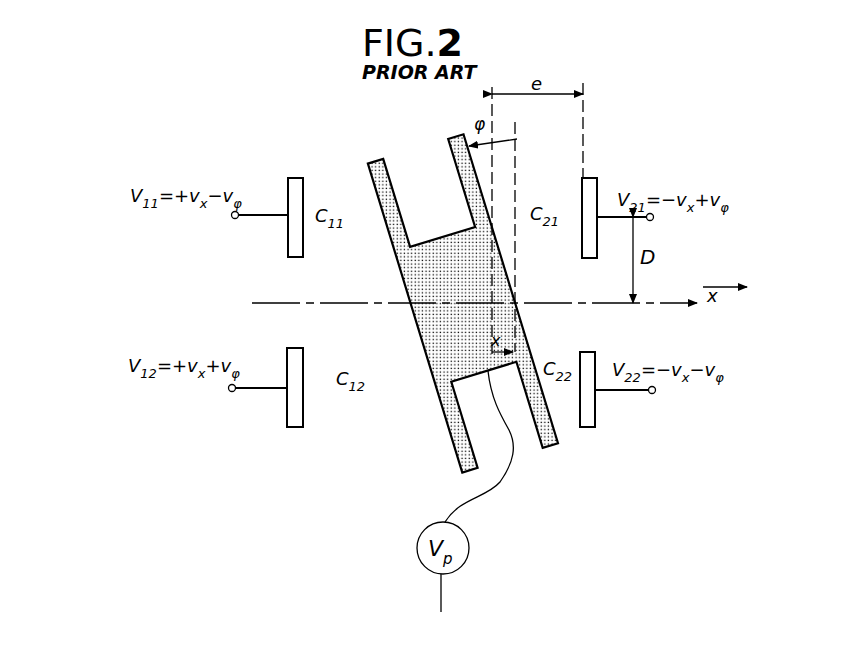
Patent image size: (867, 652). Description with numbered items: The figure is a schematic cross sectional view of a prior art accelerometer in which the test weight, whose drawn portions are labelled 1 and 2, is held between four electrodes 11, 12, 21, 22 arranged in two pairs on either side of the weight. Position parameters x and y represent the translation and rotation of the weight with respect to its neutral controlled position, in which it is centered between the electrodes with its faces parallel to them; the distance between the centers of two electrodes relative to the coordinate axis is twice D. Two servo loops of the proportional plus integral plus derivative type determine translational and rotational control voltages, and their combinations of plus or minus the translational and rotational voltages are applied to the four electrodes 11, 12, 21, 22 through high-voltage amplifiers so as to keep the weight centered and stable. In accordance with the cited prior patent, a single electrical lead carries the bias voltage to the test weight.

The first tuning fork arm 1 is at (375, 162).
The second tuning fork arm 2 is at (454, 138).
The electrode 11 is at (296, 178).
The electrode 12 is at (293, 427).
The electrode 21 is at (596, 184).
The electrode 22 is at (590, 427).